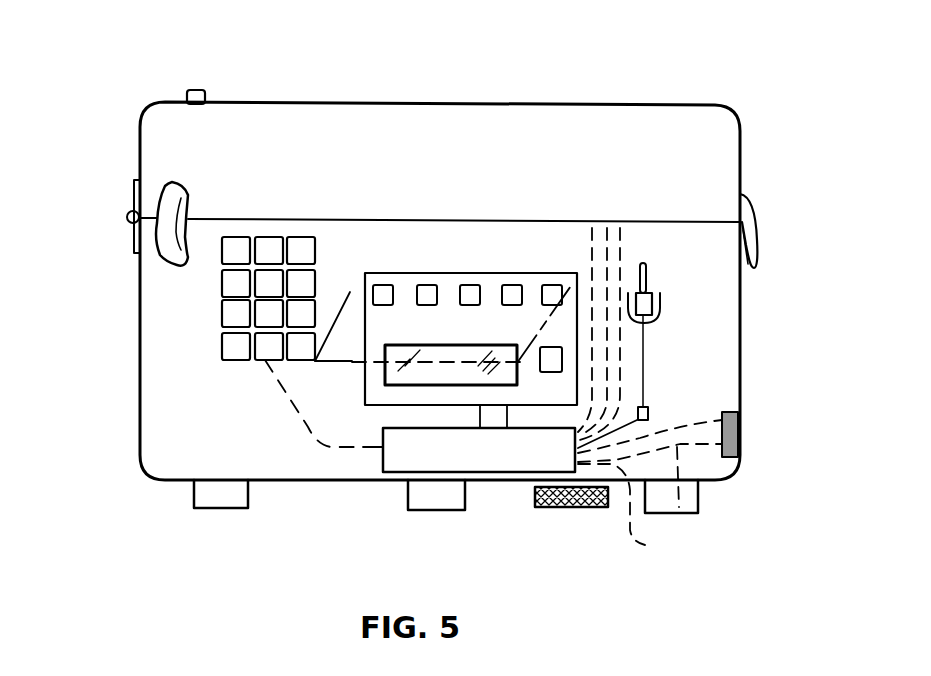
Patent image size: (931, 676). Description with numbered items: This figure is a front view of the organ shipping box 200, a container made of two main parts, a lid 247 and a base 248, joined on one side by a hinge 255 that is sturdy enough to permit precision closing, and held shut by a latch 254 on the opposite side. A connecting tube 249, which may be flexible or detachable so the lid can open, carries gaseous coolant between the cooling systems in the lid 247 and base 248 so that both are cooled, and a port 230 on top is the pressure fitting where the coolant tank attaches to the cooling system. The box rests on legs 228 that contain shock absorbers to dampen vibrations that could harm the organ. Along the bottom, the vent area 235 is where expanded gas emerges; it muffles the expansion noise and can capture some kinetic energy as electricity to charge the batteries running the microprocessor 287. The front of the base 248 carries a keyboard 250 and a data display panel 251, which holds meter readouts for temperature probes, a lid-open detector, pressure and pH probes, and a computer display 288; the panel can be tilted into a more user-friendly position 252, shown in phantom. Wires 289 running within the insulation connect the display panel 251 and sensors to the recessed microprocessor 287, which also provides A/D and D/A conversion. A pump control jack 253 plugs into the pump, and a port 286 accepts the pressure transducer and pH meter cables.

The organ shipping box 200 is at (645, 92).
The legs 228 is at (208, 493).
The port 230 is at (196, 90).
The vent area 235 is at (552, 510).
The lid 247 is at (317, 165).
The base 248 is at (234, 421).
The connecting tube 249 is at (160, 253).
The keyboard 250 is at (233, 310).
The data display panel 251 is at (365, 393).
The user-friendly position 252 is at (340, 322).
The pump control jack 253 is at (652, 281).
The latch 254 is at (754, 208).
The hinge 255 is at (137, 240).
The port 286 is at (740, 447).
The microprocessor 287 is at (502, 461).
The computer display 288 is at (423, 375).
The wires 289 is at (592, 232).